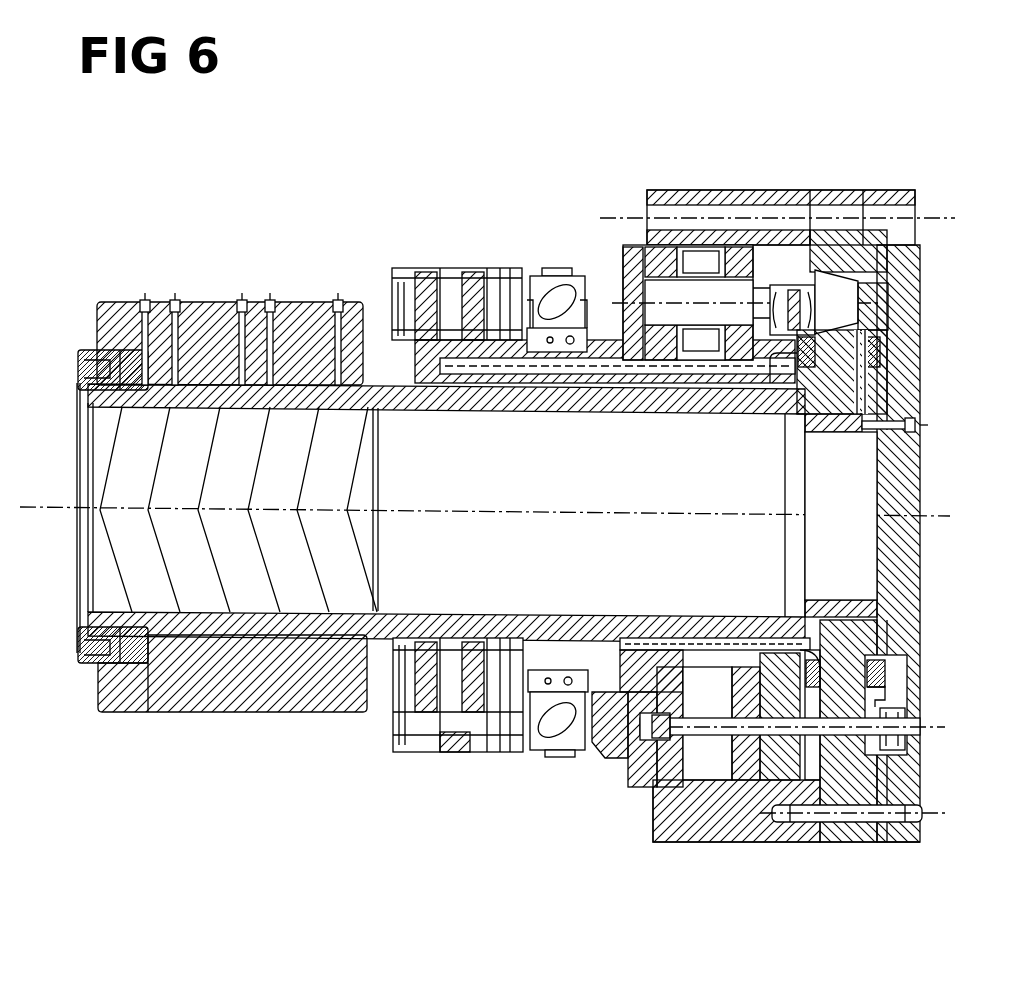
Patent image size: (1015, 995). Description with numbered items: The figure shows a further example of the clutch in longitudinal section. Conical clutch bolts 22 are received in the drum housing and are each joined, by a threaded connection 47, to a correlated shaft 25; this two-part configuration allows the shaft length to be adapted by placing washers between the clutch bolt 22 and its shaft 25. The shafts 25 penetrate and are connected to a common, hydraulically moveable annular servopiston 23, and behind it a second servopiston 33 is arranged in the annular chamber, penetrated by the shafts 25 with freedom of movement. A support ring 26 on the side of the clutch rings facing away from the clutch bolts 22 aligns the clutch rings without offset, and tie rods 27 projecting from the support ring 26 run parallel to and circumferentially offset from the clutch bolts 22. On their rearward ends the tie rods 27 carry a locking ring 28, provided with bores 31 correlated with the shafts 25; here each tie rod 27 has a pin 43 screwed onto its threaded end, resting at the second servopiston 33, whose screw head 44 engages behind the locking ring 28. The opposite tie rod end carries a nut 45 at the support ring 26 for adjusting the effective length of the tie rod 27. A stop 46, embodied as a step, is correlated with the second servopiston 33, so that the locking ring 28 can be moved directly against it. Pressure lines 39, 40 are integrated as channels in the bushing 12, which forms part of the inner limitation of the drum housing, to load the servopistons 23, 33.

The bushing 12 is at (440, 365).
The bores 31 is at (410, 273).
The pressure line 39 is at (597, 378).
The stop 46 is at (746, 233).
The shaft 25 is at (697, 280).
The servopiston 23 is at (740, 252).
The threaded connection 47 is at (792, 295).
The clutch bolt 22 is at (828, 293).
The support ring 26 is at (870, 710).
The nut 45 is at (895, 738).
The screw head 44 is at (597, 745).
The locking ring 28 is at (633, 753).
The pin 43 is at (653, 740).
The second servopiston 33 is at (672, 765).
The pressure line 40 is at (717, 652).
The tie rod 27 is at (820, 730).